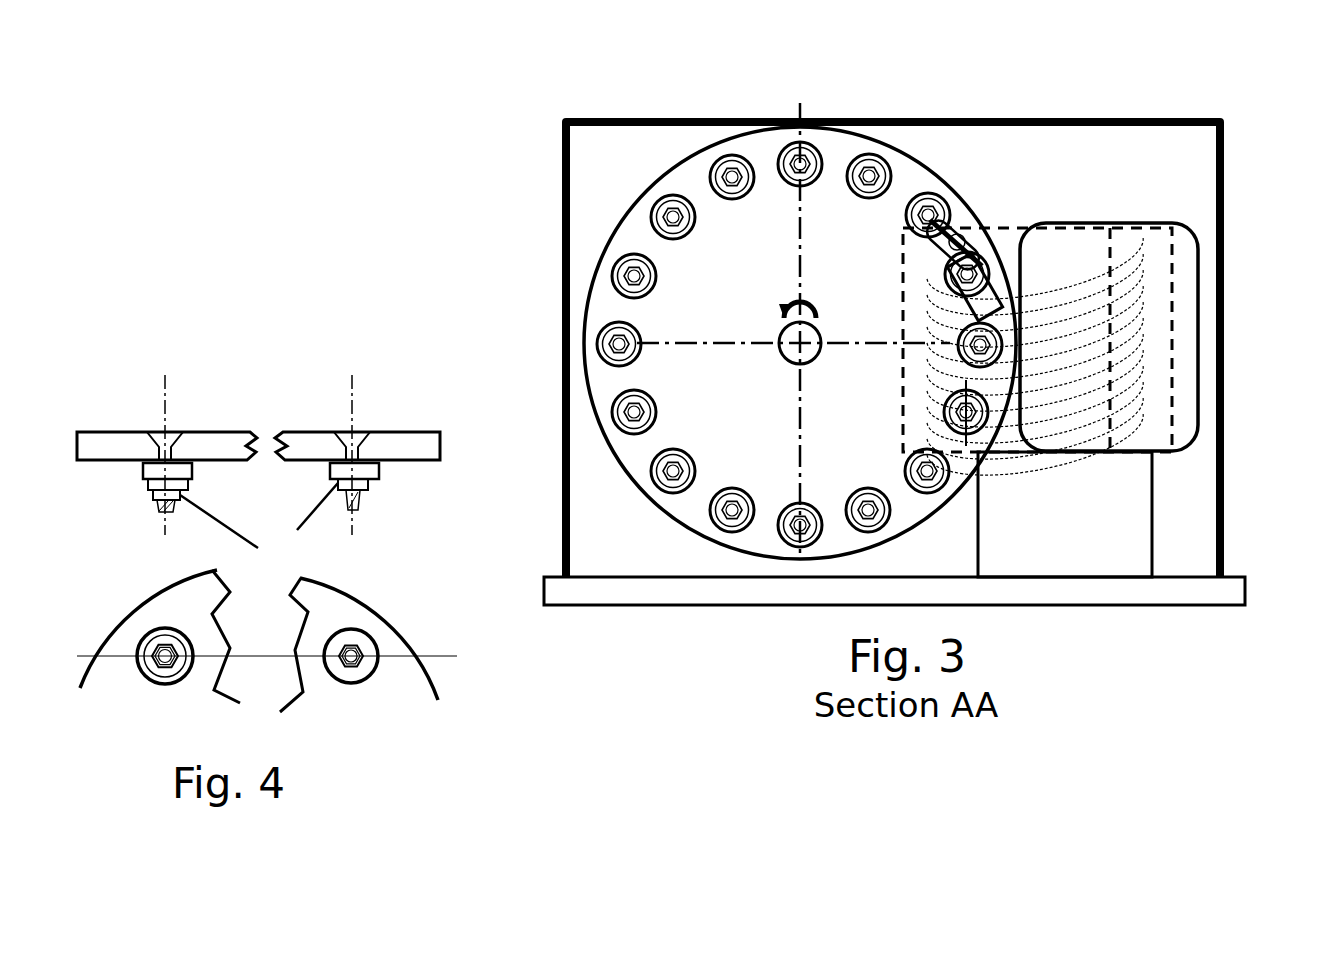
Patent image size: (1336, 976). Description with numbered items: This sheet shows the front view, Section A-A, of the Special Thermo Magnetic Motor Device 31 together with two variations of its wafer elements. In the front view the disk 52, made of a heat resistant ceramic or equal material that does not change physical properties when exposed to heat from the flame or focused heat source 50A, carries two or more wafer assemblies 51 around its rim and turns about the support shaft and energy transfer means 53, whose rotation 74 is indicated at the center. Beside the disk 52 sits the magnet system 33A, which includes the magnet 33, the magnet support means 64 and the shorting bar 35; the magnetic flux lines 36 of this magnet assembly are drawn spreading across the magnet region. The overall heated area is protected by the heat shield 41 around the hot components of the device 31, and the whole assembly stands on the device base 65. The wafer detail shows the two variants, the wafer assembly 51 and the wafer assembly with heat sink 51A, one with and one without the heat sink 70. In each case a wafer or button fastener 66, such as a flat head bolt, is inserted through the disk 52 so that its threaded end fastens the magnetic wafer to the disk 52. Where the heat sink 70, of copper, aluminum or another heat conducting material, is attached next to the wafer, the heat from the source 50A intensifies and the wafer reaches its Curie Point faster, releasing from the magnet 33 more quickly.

In FIG. 3, the Special Thermo Magnetic Motor Device 31 is at (1148, 647).
In FIG. 3, the magnet 33 is at (1007, 232).
In FIG. 3, the magnet system 33A is at (1118, 198).
In FIG. 3, the shorting bar 35 is at (1185, 262).
In FIG. 3, the magnetic flux lines 36 is at (1047, 318).
In FIG. 3, the heat shield 41 is at (1225, 382).
In FIG. 3, the flame or focused heat source 50A is at (950, 230).
In FIG. 3, the wafer assembly 51 is at (808, 160).
In FIG. 4, the wafer assembly 51 is at (415, 523).
In FIG. 4, the wafer assembly with heat sink 51A is at (147, 517).
In FIG. 3, the disk 52 is at (735, 232).
In FIG. 4, the disk 52 is at (103, 437).
In FIG. 3, the disk assembly support shaft and energy transfer means 53 is at (786, 355).
In FIG. 3, the magnet support means 64 is at (1113, 514).
In FIG. 3, the Special Thermo Magnetic Motor Device base 65 is at (1210, 596).
In FIG. 4, the wafer or button fastener 66 is at (358, 427).
In FIG. 4, the heat sink 70 is at (147, 485).
In FIG. 3, the rotation of support/turning shaft 74 is at (783, 314).